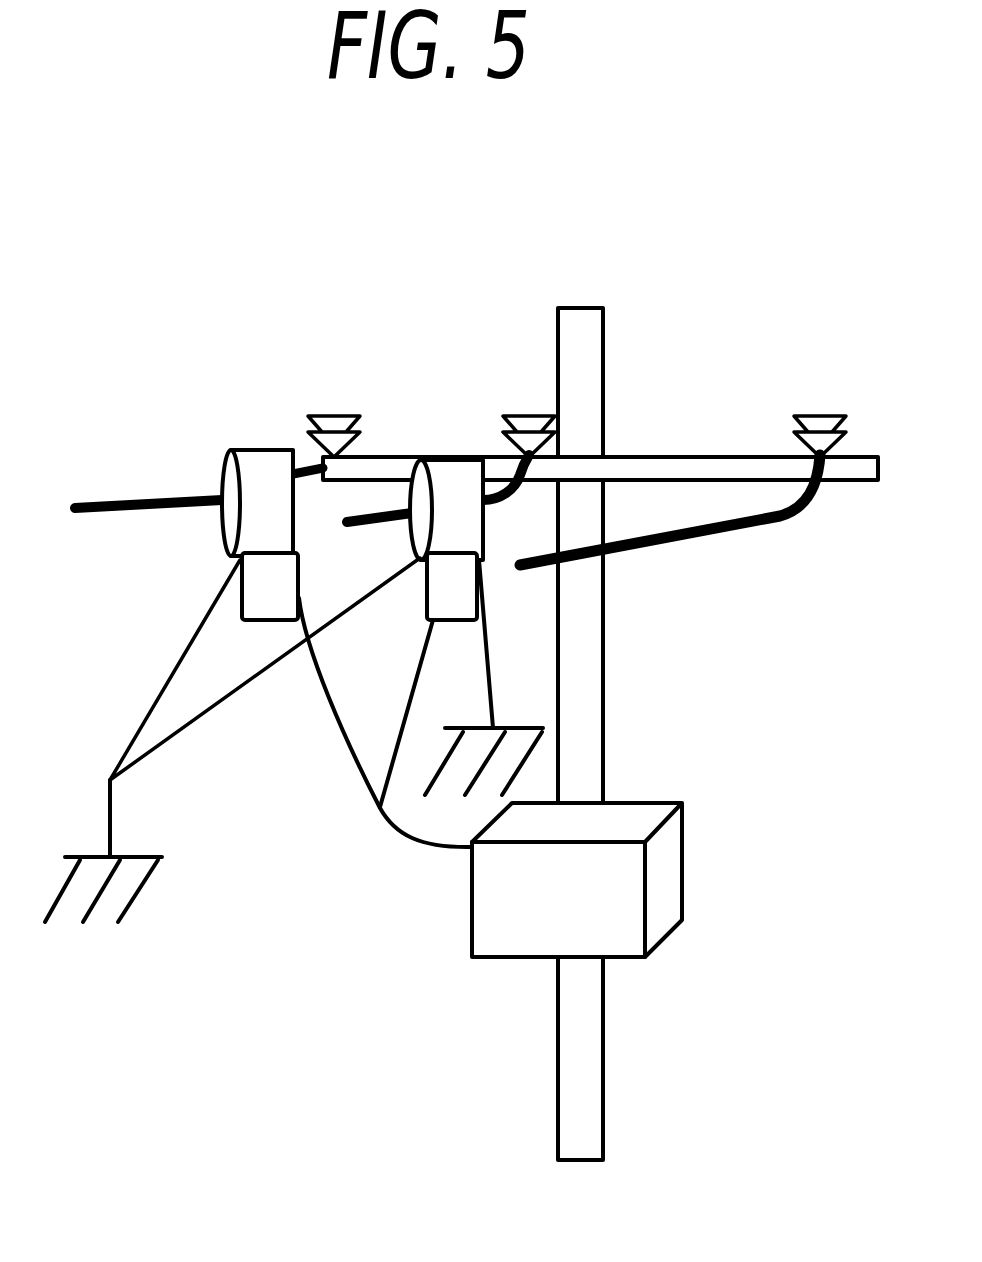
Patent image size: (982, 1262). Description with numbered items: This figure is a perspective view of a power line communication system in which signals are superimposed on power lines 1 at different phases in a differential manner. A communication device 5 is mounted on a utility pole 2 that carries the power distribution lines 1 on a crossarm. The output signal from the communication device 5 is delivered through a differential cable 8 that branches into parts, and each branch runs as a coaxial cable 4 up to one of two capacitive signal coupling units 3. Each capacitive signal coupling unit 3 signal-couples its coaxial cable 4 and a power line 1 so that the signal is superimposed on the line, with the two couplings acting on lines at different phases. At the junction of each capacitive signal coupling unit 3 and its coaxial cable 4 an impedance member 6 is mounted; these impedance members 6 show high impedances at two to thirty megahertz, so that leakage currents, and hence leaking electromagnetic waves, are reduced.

The power distribution line 1 is at (105, 500).
The utility pole 2 is at (573, 1117).
The capacitive signal coupling unit 3 is at (270, 467).
The coaxial cable 4 is at (320, 660).
The communication device 5 is at (670, 877).
The impedance member 6 is at (250, 588).
The differential cable 8 is at (417, 847).